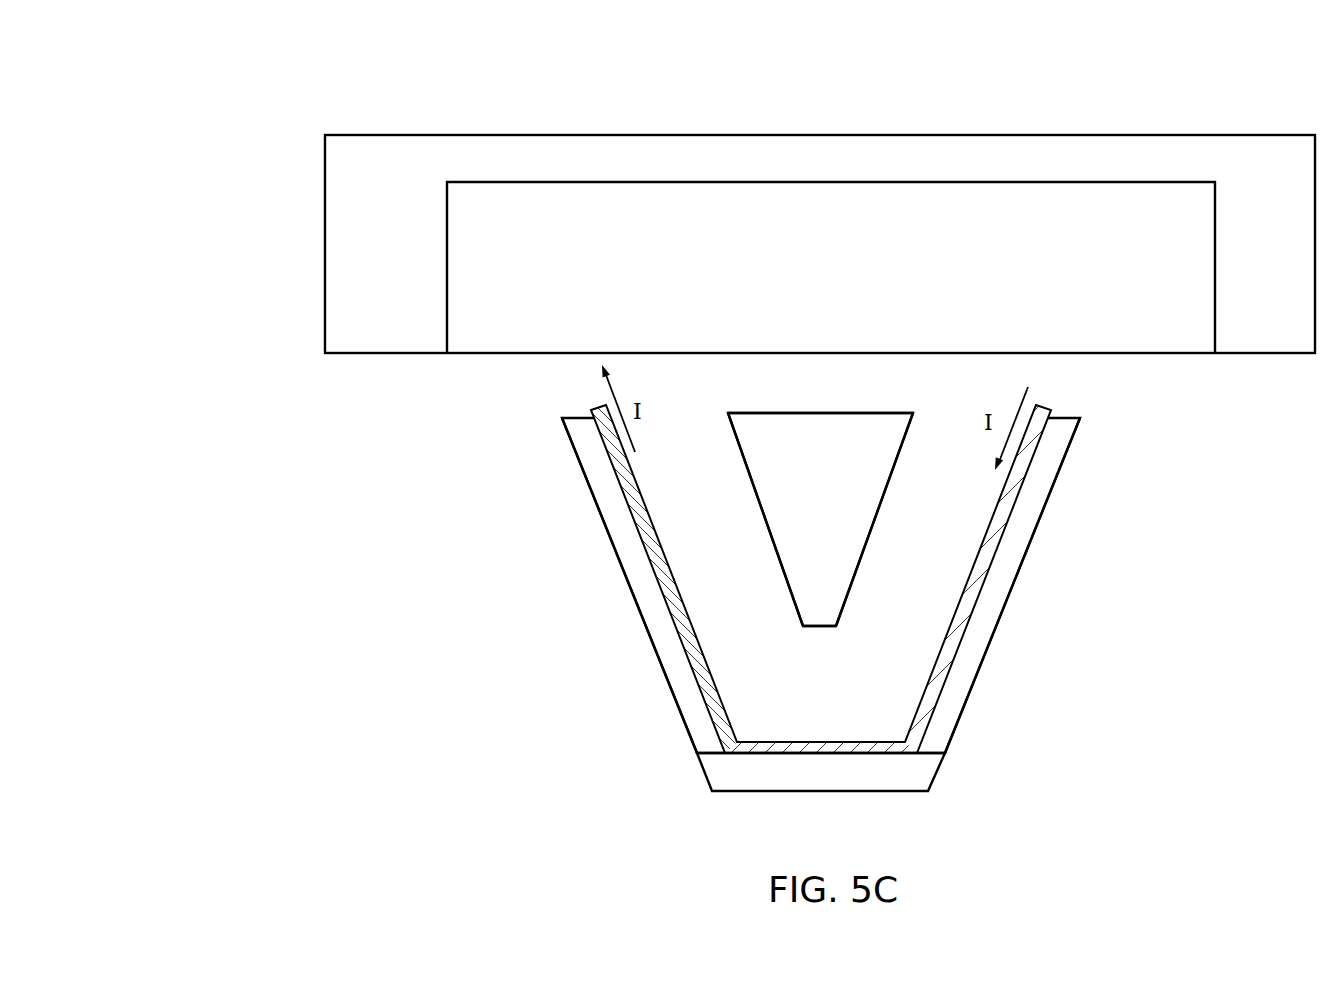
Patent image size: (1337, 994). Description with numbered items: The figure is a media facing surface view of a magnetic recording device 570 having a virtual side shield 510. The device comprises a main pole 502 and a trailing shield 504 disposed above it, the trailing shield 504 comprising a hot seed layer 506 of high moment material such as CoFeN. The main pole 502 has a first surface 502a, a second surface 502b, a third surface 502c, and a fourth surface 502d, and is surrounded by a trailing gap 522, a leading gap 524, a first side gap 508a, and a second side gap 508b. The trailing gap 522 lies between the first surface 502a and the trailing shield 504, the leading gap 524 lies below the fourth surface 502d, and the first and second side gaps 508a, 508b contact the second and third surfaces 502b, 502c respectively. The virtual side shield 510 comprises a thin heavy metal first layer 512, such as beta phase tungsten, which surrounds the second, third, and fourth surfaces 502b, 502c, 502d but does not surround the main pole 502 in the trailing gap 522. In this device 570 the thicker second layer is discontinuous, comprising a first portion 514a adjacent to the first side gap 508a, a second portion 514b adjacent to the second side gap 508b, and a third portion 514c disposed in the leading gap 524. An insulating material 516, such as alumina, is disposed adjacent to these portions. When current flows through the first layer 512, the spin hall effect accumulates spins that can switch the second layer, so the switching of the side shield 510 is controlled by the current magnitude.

The magnetic recording device 570 is at (288, 88).
The trailing shield 504 is at (383, 323).
The hot seed layer 506 is at (527, 323).
The virtual side shield 510 is at (560, 496).
The first portion of the second layer 514a is at (620, 569).
The second portion of the second layer 514b is at (1022, 563).
The third portion of the second layer 514c is at (850, 788).
The first layer 512 is at (778, 741).
The main pole 502 is at (841, 534).
The first surface 502a is at (826, 414).
The second surface 502b is at (760, 506).
The third surface 502c is at (880, 506).
The fourth surface 502d is at (818, 627).
The trailing gap 522 is at (848, 393).
The first side gap 508a is at (771, 632).
The second side gap 508b is at (934, 632).
The leading gap 524 is at (867, 725).
The insulating material 516 is at (523, 705).